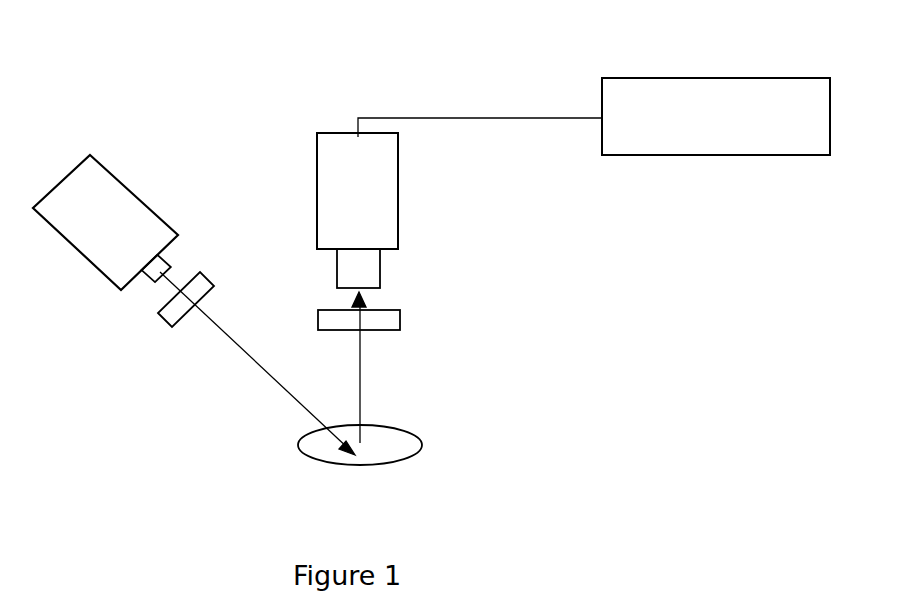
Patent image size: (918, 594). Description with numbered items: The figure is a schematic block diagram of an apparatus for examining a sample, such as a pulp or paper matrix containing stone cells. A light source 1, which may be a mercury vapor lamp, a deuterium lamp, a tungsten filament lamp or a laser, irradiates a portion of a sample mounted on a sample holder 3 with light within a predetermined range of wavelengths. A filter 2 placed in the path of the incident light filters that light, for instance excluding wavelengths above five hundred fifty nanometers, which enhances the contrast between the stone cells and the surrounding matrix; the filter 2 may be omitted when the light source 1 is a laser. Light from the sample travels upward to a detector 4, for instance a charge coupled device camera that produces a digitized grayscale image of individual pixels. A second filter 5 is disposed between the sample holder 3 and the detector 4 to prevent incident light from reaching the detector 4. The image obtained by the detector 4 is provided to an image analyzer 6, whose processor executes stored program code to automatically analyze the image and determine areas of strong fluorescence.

The light source 1 is at (125, 178).
The filter 2 is at (207, 278).
The sample holder 3 is at (413, 455).
The detector 4 is at (335, 132).
The second filter 5 is at (390, 328).
The image analyzer 6 is at (743, 155).